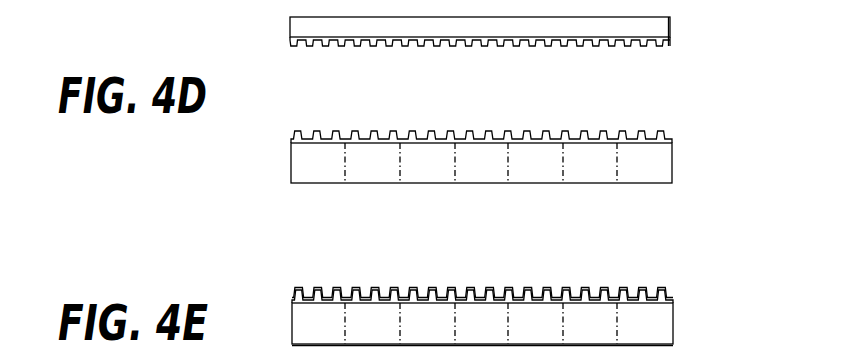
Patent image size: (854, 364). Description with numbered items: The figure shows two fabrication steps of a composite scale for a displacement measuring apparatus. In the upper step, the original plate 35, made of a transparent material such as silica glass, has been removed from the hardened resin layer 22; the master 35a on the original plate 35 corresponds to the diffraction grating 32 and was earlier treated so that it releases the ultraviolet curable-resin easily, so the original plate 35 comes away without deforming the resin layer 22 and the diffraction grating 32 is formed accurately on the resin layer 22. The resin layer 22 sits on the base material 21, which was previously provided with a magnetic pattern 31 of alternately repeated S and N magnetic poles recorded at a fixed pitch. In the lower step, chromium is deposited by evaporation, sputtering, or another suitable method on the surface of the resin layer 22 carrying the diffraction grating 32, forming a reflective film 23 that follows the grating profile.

In FIG. 4D, the base material 21 is at (665, 164).
In FIG. 4E, the base material 21 is at (665, 330).
In FIG. 4D, the resin layer 22 is at (525, 110).
In FIG. 4E, the resin layer 22 is at (527, 270).
In FIG. 4E, the reflective film 23 is at (583, 288).
In FIG. 4D, the magnetic pattern 31 is at (500, 157).
In FIG. 4D, the diffraction grating 32 is at (491, 121).
In FIG. 4E, the diffraction grating 32 is at (417, 278).
In FIG. 4D, the original plate 35 is at (532, 43).
In FIG. 4D, the master 35a is at (650, 46).